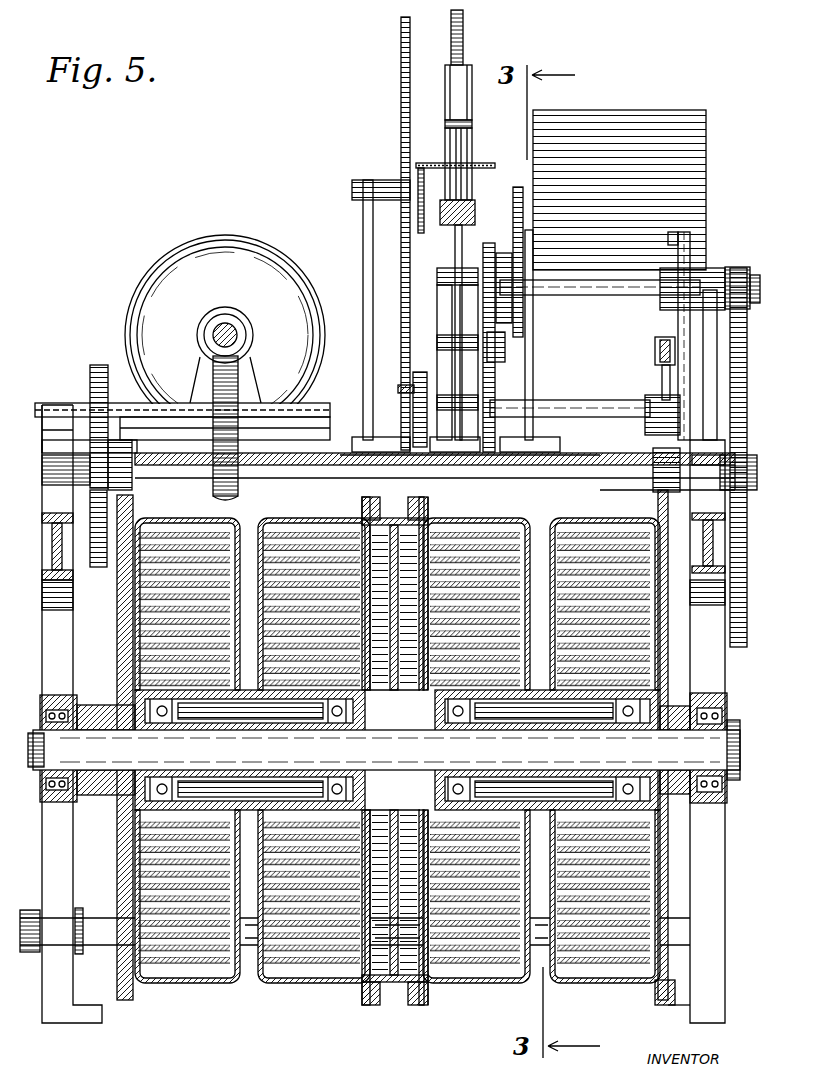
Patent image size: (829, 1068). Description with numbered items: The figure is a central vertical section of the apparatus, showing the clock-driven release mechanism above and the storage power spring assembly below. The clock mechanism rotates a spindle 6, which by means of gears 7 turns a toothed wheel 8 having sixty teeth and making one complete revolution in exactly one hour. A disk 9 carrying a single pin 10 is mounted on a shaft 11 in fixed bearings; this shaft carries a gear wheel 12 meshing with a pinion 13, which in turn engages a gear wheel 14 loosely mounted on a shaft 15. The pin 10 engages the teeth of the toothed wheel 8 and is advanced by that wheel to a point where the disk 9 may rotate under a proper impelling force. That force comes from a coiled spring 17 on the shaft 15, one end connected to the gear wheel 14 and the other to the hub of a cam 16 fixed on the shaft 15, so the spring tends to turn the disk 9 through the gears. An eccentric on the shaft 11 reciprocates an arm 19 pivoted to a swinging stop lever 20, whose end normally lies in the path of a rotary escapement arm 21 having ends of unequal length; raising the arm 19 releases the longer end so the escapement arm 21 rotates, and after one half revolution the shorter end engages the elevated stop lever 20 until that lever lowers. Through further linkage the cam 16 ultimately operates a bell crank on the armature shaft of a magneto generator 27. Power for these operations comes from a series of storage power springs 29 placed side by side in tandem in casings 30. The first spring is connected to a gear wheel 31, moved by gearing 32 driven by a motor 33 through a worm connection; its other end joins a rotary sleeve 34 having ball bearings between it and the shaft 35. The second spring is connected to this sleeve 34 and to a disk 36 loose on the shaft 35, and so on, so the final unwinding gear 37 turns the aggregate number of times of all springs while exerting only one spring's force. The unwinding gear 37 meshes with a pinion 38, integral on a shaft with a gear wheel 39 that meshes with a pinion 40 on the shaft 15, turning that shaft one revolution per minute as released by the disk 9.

The spindle 6 is at (464, 40).
The gears 7 is at (424, 165).
The toothed wheel 8 is at (400, 139).
The disk 9 is at (420, 372).
The pin 10 is at (405, 392).
The shaft 11 is at (562, 409).
The gear wheel 12 is at (496, 442).
The pinion 13 is at (506, 347).
The gear wheel 14 is at (516, 235).
The shaft 15 is at (602, 282).
The cam 16 is at (513, 262).
The coiled spring 17 is at (520, 245).
The arm 19 is at (664, 380).
The stop lever 20 is at (663, 337).
The escapement arm 21 is at (690, 254).
The magneto generator 27 is at (619, 190).
The storage power springs 29 is at (192, 960).
The casings 30 is at (252, 982).
The gear wheel 31 is at (120, 646).
The gearing 32 is at (98, 400).
The motor 33 is at (225, 335).
The rotary sleeve 34 is at (200, 797).
The shaft 35 is at (384, 750).
The disk 36 is at (424, 500).
The unwinding gear 37 is at (670, 663).
The pinion 38 is at (655, 452).
The gear wheel 39 is at (748, 448).
The pinion 40 is at (752, 277).